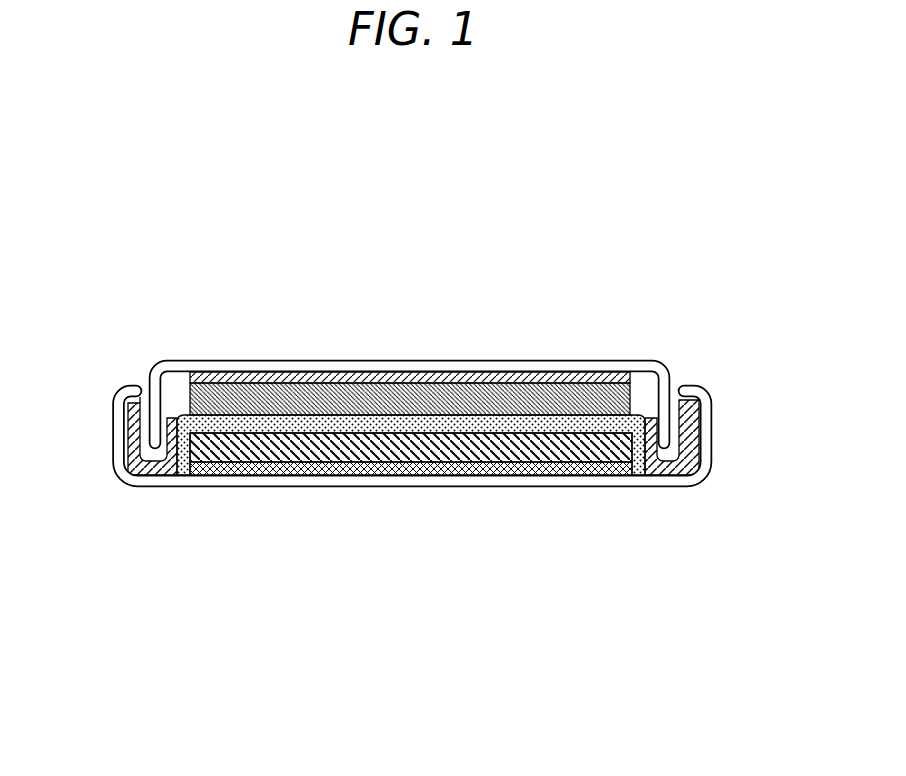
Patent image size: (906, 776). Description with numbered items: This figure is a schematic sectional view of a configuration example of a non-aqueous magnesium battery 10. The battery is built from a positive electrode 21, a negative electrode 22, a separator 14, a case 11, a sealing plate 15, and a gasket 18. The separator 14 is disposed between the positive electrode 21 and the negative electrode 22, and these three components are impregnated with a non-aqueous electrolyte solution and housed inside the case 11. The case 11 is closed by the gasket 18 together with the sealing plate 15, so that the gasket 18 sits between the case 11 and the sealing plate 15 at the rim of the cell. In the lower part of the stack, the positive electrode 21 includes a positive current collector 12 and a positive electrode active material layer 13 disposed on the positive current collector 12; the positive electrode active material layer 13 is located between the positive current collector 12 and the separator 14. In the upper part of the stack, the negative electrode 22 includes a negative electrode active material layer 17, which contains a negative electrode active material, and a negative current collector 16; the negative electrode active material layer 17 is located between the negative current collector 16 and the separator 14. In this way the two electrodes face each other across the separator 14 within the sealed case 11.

The non-aqueous magnesium battery 10 is at (584, 183).
The case 11 is at (231, 478).
The positive current collector 12 is at (437, 470).
The positive electrode active material layer 13 is at (548, 440).
The separator 14 is at (593, 427).
The sealing plate 15 is at (192, 360).
The negative current collector 16 is at (387, 379).
The negative electrode active material layer 17 is at (304, 400).
The gasket 18 is at (678, 463).
The positive electrode 21 is at (553, 585).
The negative electrode 22 is at (408, 280).